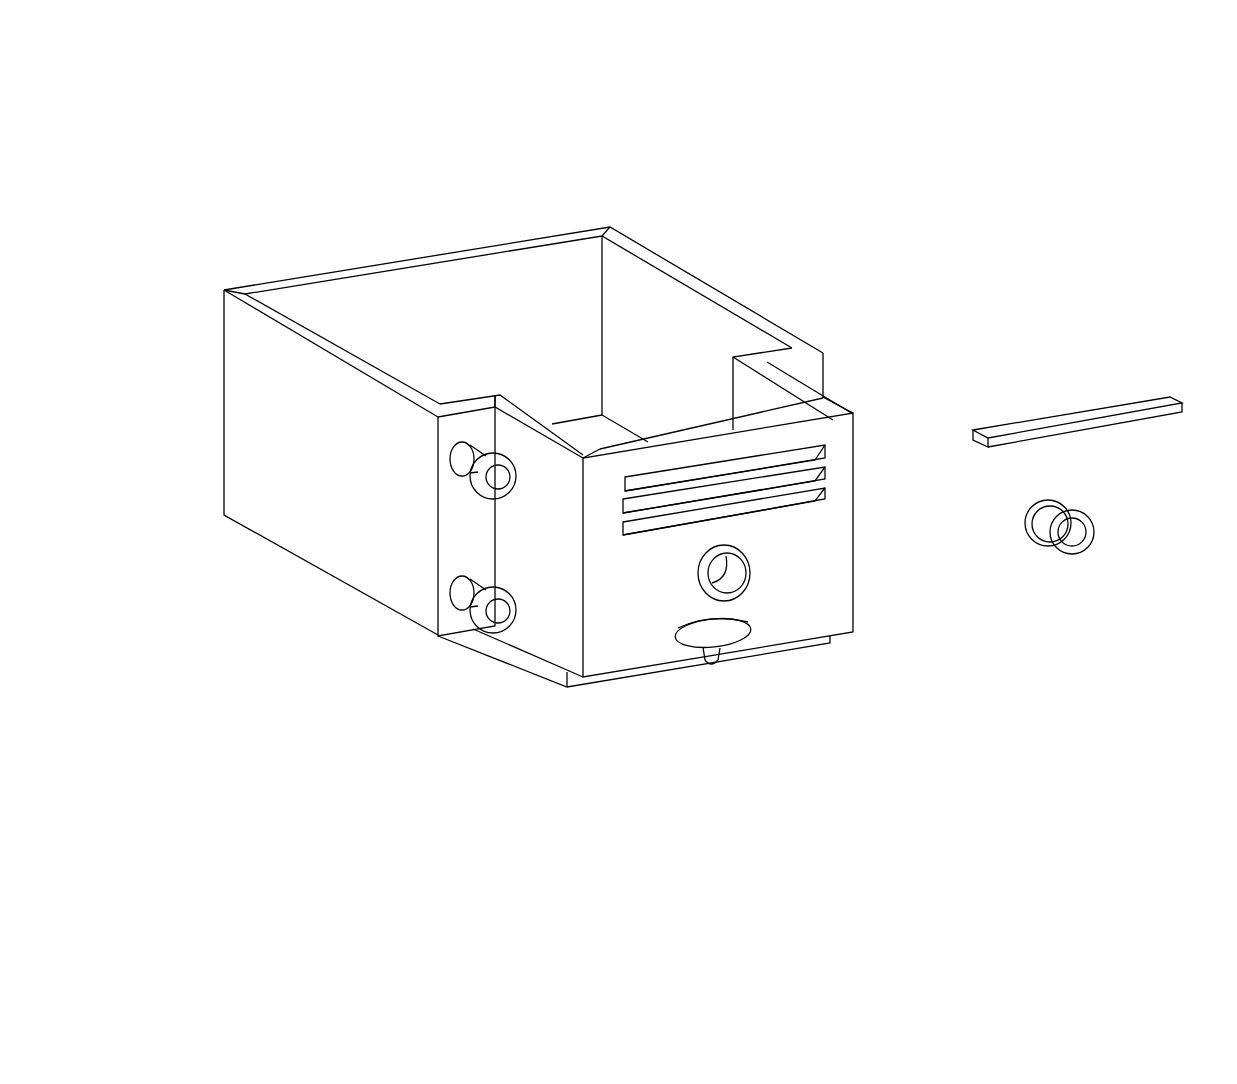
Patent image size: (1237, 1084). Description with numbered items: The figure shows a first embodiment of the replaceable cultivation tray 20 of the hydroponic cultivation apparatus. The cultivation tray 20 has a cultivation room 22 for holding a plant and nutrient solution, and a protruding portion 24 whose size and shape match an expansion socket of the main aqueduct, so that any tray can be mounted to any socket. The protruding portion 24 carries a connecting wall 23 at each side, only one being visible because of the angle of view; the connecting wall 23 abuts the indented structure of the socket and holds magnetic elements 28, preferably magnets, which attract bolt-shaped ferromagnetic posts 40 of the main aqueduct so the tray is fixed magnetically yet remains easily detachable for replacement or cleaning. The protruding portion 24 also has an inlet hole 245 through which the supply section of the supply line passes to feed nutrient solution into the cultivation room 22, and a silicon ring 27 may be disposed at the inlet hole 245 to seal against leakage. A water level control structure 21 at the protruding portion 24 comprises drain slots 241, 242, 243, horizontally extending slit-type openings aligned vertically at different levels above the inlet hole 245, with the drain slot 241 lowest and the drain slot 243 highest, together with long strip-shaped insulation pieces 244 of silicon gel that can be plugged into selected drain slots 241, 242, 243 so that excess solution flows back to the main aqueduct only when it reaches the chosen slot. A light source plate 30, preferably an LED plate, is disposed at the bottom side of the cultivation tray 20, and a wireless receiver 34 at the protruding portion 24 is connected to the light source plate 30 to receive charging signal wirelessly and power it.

The cultivation tray 20 is at (990, 182).
The water level control structure 21 is at (1037, 358).
The cultivation room 22 is at (470, 312).
The connecting wall 23 is at (452, 540).
The protruding portion 24 is at (793, 608).
The drain slot 241 is at (828, 491).
The drain slot 242 is at (828, 468).
The drain slot 243 is at (828, 447).
The insulation piece 244 is at (1012, 428).
The inlet hole 245 is at (735, 575).
The silicon ring 27 is at (1072, 540).
The magnetic element 28 is at (457, 462).
The light source plate 30 is at (537, 659).
The wireless receiver 34 is at (733, 634).
The ferromagnetic post 40 is at (505, 472).